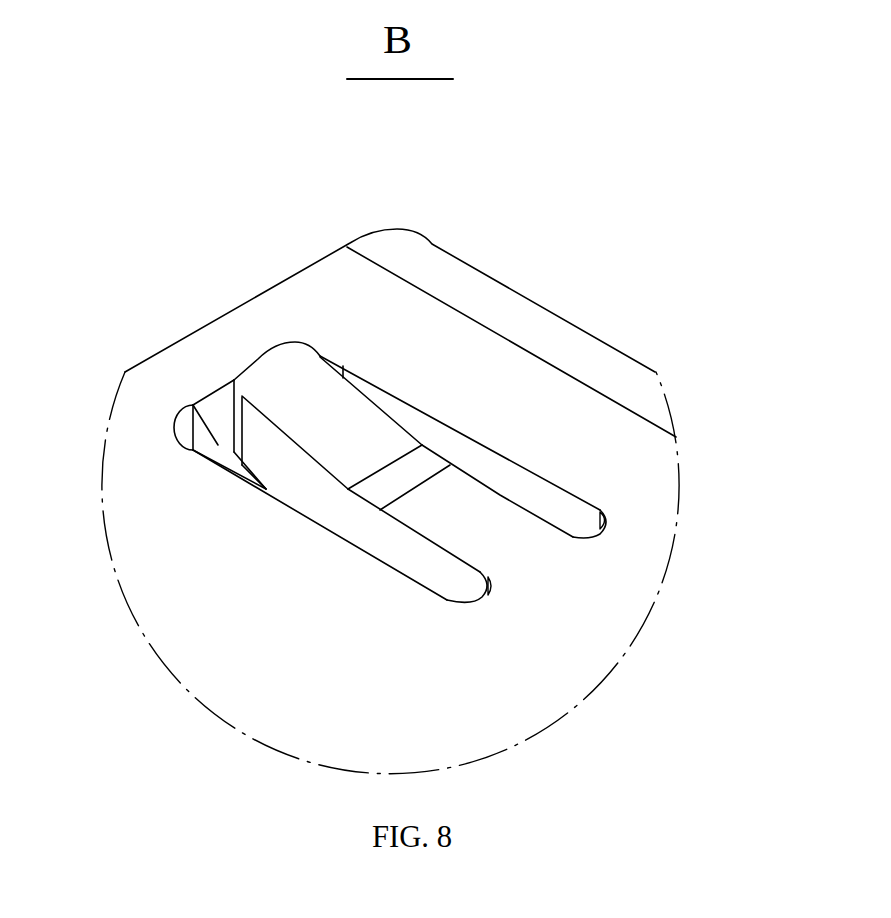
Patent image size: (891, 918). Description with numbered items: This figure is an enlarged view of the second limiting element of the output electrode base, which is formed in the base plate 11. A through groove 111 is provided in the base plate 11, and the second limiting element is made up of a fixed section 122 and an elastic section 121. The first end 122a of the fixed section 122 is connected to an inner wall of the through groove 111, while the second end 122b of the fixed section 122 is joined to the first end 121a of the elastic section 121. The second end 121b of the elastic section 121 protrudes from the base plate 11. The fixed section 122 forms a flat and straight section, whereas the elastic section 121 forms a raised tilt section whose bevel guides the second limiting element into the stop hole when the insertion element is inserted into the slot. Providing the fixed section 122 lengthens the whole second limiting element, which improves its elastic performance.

The base plate 11 is at (480, 370).
The through groove 111 is at (190, 413).
The elastic section 121 is at (526, 327).
The first end of the elastic section 121a is at (591, 382).
The second end of the elastic section 121b is at (295, 403).
The fixed section 122 is at (463, 515).
The first end of the fixed section 122a is at (545, 557).
The second end of the fixed section 122b is at (413, 474).